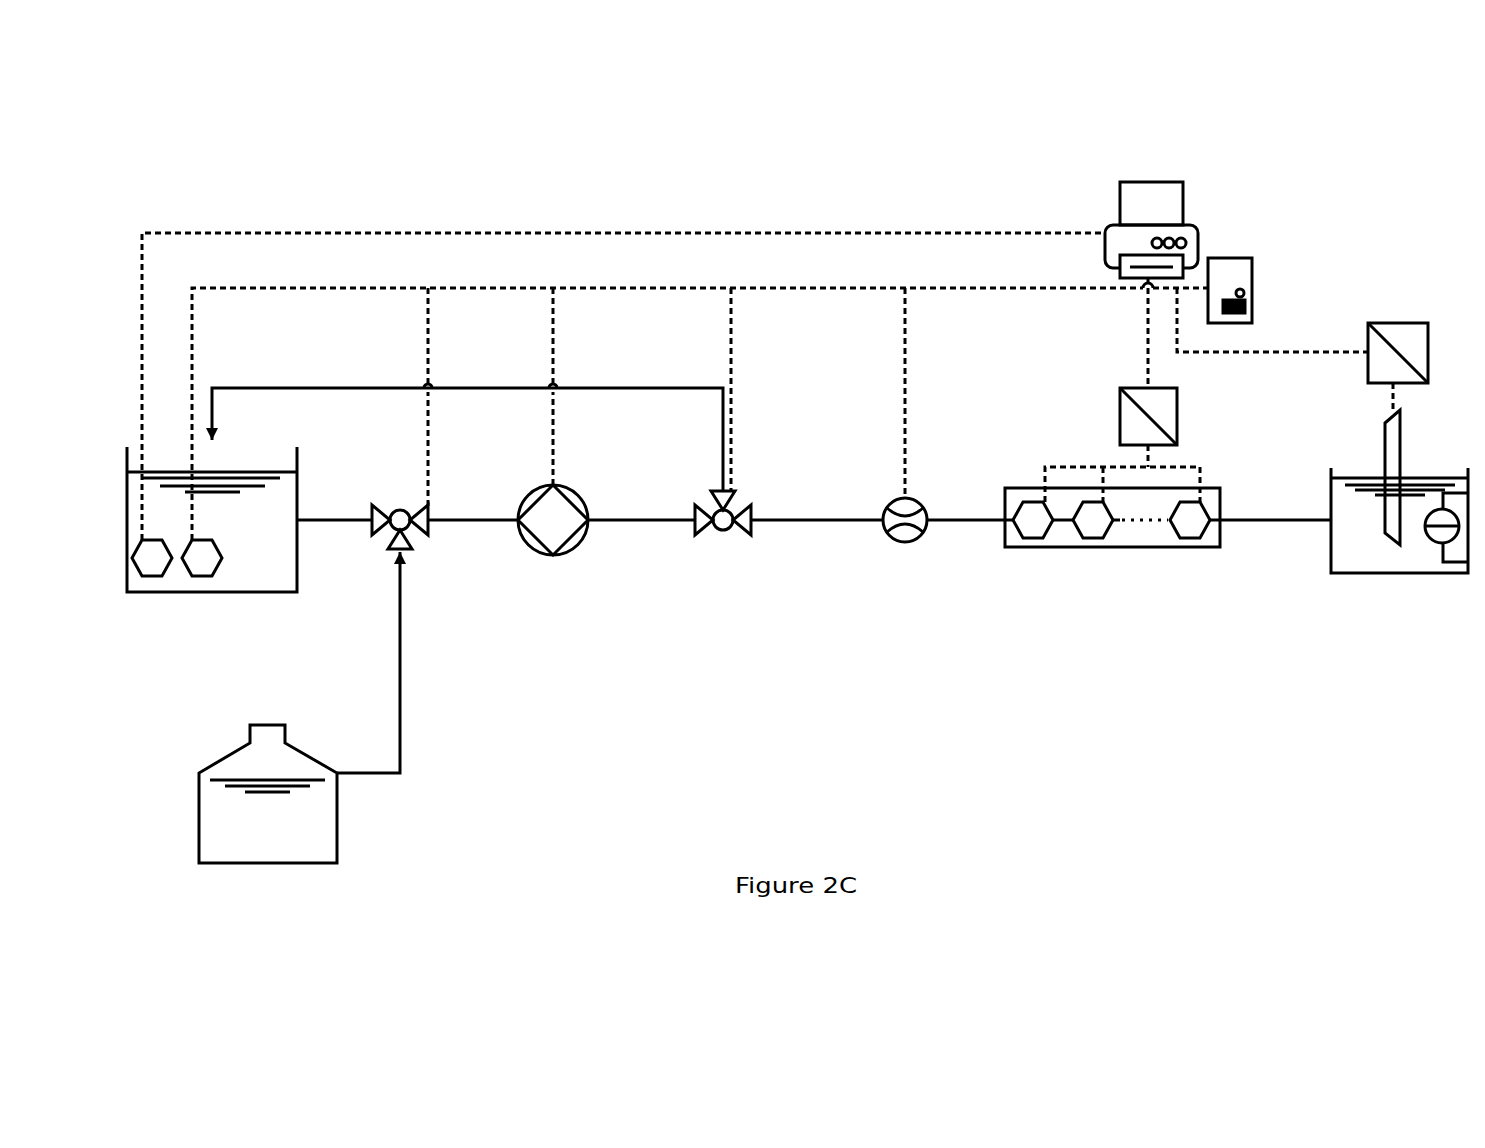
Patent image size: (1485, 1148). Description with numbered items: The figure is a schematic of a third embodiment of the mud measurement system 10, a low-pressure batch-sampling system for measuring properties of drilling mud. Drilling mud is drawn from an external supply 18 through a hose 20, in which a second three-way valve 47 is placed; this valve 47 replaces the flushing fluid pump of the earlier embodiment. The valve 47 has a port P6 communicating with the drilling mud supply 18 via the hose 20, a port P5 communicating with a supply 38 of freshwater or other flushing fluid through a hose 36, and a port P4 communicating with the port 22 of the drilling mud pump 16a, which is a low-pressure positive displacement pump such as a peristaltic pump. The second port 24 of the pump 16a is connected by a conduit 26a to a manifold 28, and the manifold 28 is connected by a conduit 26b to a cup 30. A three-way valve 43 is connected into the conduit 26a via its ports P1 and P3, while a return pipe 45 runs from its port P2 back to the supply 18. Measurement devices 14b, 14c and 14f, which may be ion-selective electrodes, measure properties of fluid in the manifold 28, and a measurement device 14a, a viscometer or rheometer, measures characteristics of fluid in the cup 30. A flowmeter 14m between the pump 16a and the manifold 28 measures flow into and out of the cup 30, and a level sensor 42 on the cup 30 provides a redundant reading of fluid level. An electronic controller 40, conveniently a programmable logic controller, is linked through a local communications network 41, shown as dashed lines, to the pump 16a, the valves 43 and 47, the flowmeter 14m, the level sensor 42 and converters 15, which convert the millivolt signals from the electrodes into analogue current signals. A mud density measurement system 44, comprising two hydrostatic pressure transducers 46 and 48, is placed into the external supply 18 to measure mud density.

The mud measurement system 10 is at (250, 125).
The measurement device 14a is at (1390, 540).
The measurement device 14b is at (1040, 540).
The measurement device 14c is at (1097, 540).
The measurement device 14f is at (1200, 540).
The flowmeter 14m is at (902, 543).
The converter 15 is at (1120, 408).
The drilling mud pump 16a is at (543, 487).
The external supply of drilling fluid 18 is at (243, 575).
The hose 20 is at (328, 518).
The port 22 is at (518, 520).
The second port 24 is at (590, 518).
The conduit 26a is at (632, 518).
The conduit 26b is at (1303, 522).
The manifold 28 is at (1100, 604).
The cup 30 is at (1385, 565).
The hose 36 is at (385, 775).
The supply of flushing fluid 38 is at (285, 865).
The electronic controller 40 is at (1120, 213).
The local communications network 41 is at (688, 288).
The level sensor 42 is at (1457, 537).
The three-way valve 43 is at (736, 385).
The mud density measurement system 44 is at (249, 751).
The return pipe 45 is at (255, 386).
The hydrostatic pressure transducer 46 is at (162, 578).
The second three-way valve 47 is at (381, 385).
The hydrostatic pressure transducer 48 is at (212, 578).
The port P1 is at (686, 535).
The port P2 is at (707, 484).
The port P3 is at (765, 502).
The port P4 is at (440, 542).
The port P5 is at (381, 556).
The port P6 is at (382, 502).